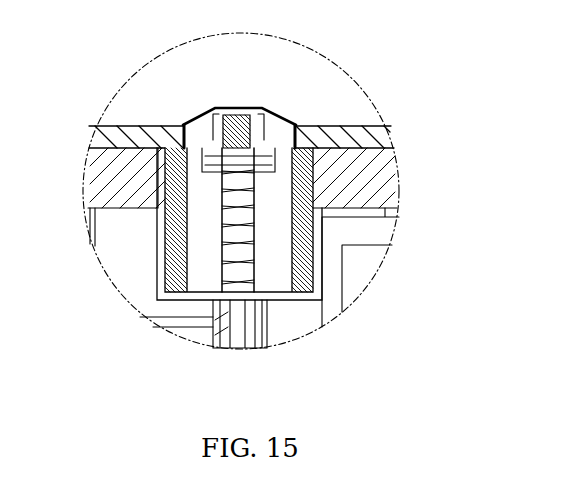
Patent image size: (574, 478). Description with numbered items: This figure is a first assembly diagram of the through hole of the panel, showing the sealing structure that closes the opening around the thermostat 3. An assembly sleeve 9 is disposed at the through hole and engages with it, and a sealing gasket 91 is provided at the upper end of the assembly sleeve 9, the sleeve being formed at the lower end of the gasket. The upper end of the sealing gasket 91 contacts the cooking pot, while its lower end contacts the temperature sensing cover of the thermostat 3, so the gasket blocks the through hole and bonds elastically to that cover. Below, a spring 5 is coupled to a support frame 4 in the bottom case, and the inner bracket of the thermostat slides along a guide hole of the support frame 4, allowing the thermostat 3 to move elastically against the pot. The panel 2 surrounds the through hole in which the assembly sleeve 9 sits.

The mounting plate 2 is at (363, 133).
The thermostat 3 is at (217, 110).
The support frame 4 is at (283, 295).
The spring 5 is at (216, 283).
The assembly sleeve 9 is at (181, 136).
The sealing gasket 91 is at (277, 115).